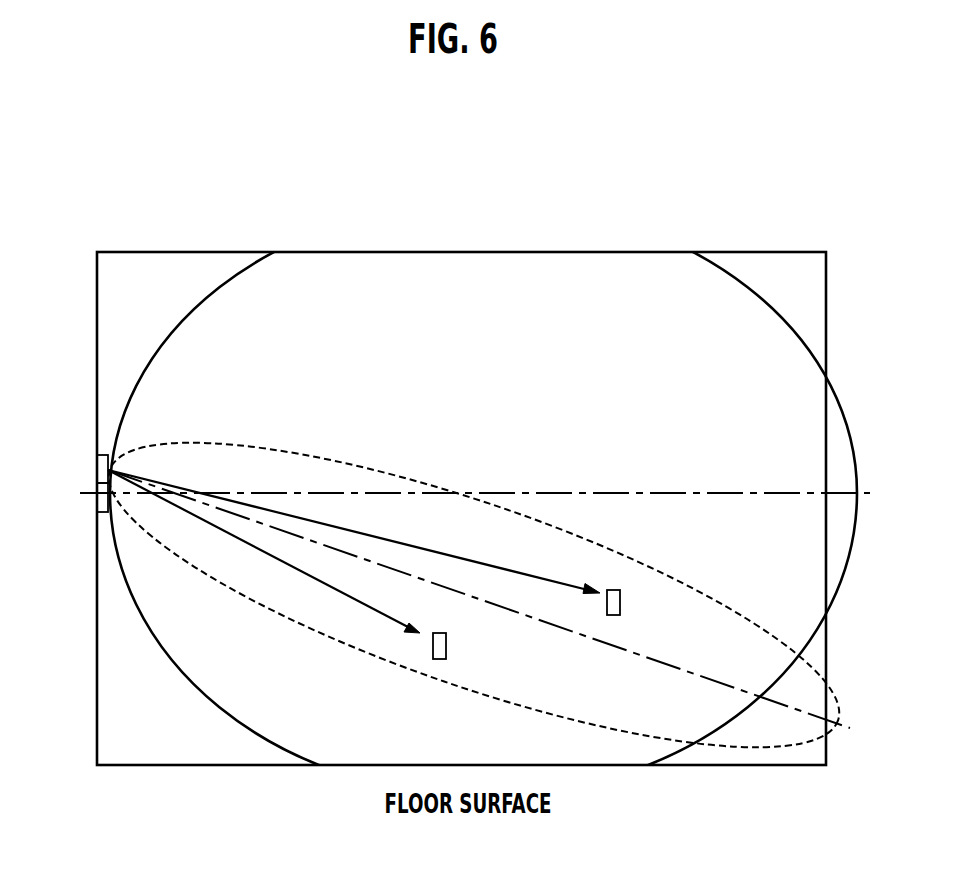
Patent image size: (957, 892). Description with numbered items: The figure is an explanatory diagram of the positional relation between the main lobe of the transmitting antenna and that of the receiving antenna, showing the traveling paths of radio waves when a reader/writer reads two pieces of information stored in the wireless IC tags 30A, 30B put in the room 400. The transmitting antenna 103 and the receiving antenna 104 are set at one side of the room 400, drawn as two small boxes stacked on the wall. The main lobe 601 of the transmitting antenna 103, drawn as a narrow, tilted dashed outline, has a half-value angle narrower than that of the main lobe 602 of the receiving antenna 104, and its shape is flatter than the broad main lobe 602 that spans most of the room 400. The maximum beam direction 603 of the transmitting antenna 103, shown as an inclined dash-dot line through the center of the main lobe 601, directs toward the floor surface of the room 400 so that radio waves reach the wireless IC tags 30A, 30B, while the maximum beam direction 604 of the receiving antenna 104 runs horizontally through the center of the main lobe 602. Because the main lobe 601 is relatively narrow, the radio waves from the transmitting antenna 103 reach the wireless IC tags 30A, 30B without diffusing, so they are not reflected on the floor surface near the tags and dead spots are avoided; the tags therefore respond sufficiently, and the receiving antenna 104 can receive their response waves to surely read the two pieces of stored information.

The room 400 is at (157, 252).
The main lobe of the receiving antenna 602 is at (838, 403).
The main lobe of the transmitting antenna 601 is at (743, 750).
The maximum beam direction of the transmitting antenna 603 is at (598, 640).
The maximum beam direction of the receiving antenna 604 is at (673, 490).
The transmitting antenna 103 is at (97, 462).
The receiving antenna 104 is at (97, 507).
The wireless IC tag 30A is at (620, 601).
The wireless IC tag 30B is at (446, 645).